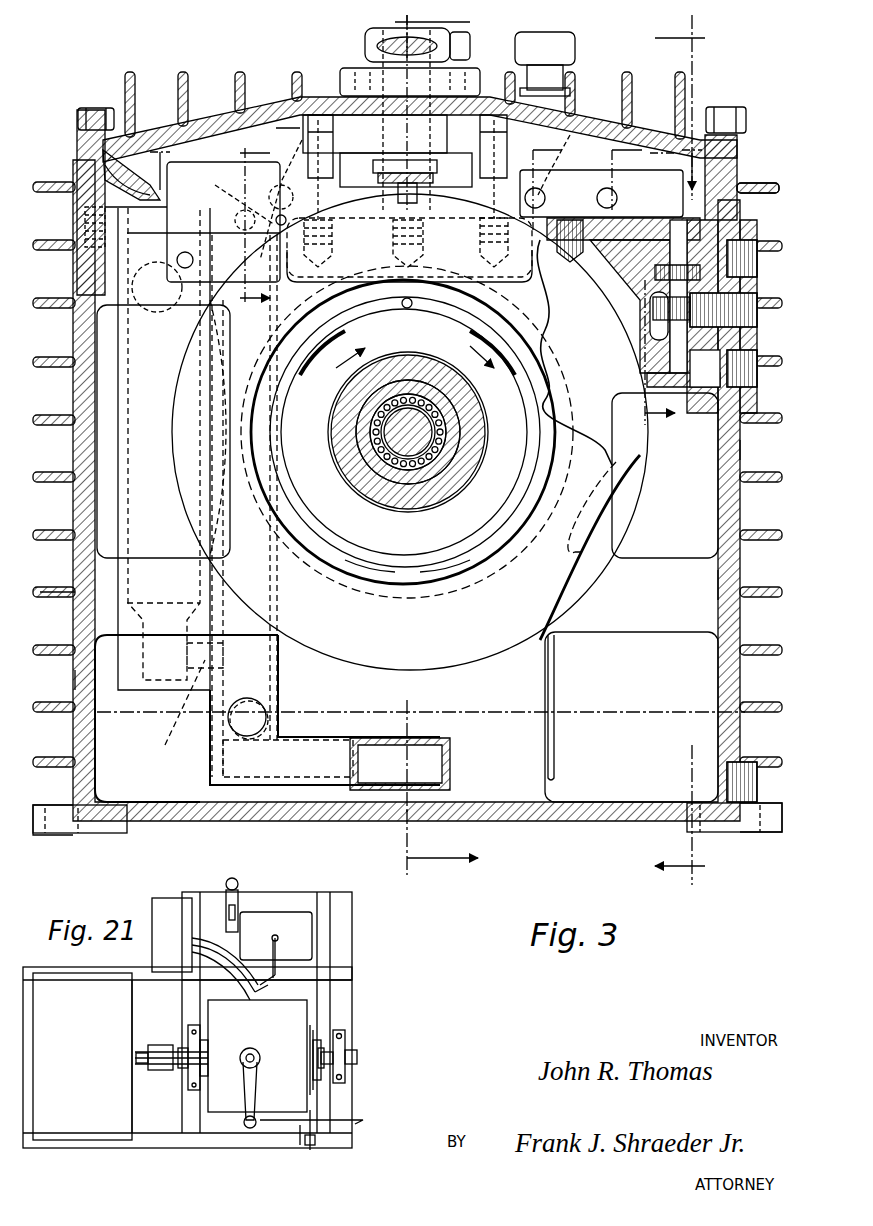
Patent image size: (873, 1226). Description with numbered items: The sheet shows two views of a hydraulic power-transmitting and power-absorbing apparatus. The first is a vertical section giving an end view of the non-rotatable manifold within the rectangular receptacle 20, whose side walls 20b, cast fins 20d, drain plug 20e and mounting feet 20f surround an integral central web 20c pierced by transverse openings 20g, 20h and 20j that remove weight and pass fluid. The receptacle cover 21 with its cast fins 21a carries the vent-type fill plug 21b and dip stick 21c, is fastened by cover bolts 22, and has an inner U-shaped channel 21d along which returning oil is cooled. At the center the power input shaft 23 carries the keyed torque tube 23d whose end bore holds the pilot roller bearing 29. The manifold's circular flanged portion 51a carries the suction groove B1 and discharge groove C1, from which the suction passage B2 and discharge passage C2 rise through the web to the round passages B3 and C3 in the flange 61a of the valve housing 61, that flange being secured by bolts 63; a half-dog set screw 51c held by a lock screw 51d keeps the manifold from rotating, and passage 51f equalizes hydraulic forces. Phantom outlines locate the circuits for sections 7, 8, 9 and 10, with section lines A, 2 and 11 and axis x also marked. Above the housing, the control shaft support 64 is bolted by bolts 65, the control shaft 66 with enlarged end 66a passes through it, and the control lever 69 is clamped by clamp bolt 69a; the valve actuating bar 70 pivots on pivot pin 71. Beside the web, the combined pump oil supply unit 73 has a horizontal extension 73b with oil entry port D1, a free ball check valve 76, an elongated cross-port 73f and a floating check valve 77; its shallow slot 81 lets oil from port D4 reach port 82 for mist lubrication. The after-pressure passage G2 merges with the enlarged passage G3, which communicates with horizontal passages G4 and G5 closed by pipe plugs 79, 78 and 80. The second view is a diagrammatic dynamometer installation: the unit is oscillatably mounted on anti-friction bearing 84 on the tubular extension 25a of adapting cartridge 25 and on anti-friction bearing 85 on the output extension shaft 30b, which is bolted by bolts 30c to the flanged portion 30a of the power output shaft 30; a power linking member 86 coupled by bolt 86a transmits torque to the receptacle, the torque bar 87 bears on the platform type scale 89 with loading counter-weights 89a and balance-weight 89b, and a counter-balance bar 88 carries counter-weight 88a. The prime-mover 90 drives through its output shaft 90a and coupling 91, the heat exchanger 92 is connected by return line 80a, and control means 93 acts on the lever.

In FIG. 3, the receptacle 20 is at (616, 824).
In FIG. 21, the receptacle 20 is at (318, 998).
In FIG. 3, the side walls 20b is at (735, 452).
In FIG. 3, the web portion 20c is at (720, 580).
In FIG. 3, the cast fins 20d is at (58, 592).
In FIG. 3, the drain plug 20e is at (748, 788).
In FIG. 3, the mounting feet 20f is at (60, 822).
In FIG. 3, the transverse opening 20g is at (108, 480).
In FIG. 3, the transverse opening 20h is at (700, 665).
In FIG. 3, the transverse opening 20j is at (700, 530).
In FIG. 3, the receptacle cover 21 is at (228, 108).
In FIG. 3, the cast fins 21a is at (762, 182).
In FIG. 3, the vent-type fill plug 21b is at (562, 44).
In FIG. 3, the dip stick 21c is at (555, 735).
In FIG. 3, the U-shaped channel 21d is at (130, 168).
In FIG. 3, the cover bolts 22 is at (90, 112).
In FIG. 21, the power input shaft 23 is at (172, 1070).
In FIG. 3, the torque tube 23d is at (416, 432).
In FIG. 21, the adapting cartridge 25 is at (200, 1030).
In FIG. 21, the tubular extension 25a is at (188, 1050).
In FIG. 3, the pilot roller bearing 29 is at (438, 432).
In FIG. 3, the power output shaft 30 is at (366, 446).
In FIG. 21, the flanged portion 30a is at (325, 1070).
In FIG. 21, the extension shaft 30b is at (358, 1052).
In FIG. 21, the bolts 30c is at (340, 1072).
In FIG. 3, the flanged portion 51a is at (459, 453).
In FIG. 3, the half-dog set screw 51c is at (425, 262).
In FIG. 3, the lock screw 51d is at (425, 233).
In FIG. 3, the passage 51f is at (410, 308).
In FIG. 3, the valve housing 61 is at (184, 218).
In FIG. 3, the flange 61a is at (620, 180).
In FIG. 3, the bolts 63 is at (332, 236).
In FIG. 3, the control shaft support 64 is at (358, 143).
In FIG. 3, the bolts 65 is at (320, 125).
In FIG. 3, the control shaft 66 is at (400, 158).
In FIG. 3, the enlarged end portion 66a is at (430, 163).
In FIG. 3, the control lever 69 is at (366, 45).
In FIG. 21, the control lever 69 is at (248, 1128).
In FIG. 3, the clamp bolt 69a is at (462, 48).
In FIG. 3, the valve actuating bar 70 is at (385, 183).
In FIG. 3, the pivot pin 71 is at (438, 177).
In FIG. 3, the combined pump oil supply unit 73 is at (126, 368).
In FIG. 3, the horizontal extension 73b is at (310, 752).
In FIG. 3, the cross-port 73f is at (251, 718).
In FIG. 3, the free ball check valve 76 is at (262, 708).
In FIG. 3, the floating check valve 77 is at (115, 312).
In FIG. 3, the pipe plug 78 is at (745, 320).
In FIG. 3, the pipe plug 79 is at (745, 380).
In FIG. 21, the pipe plug 79 is at (212, 950).
In FIG. 3, the pipe plug 80 is at (748, 268).
In FIG. 21, the return line 80a is at (220, 975).
In FIG. 3, the shallow slot 81 is at (215, 188).
In FIG. 3, the port 82 is at (284, 216).
In FIG. 21, the anti-friction bearing 84 is at (200, 1070).
In FIG. 21, the anti-friction bearing 85 is at (342, 1045).
In FIG. 21, the power linking member 86 is at (318, 1030).
In FIG. 21, the bolt 86a is at (318, 1025).
In FIG. 21, the torque bar 87 is at (278, 948).
In FIG. 21, the counter-balance bar 88 is at (305, 1128).
In FIG. 21, the counter-weight 88a is at (315, 1145).
In FIG. 21, the platform type scale 89 is at (298, 930).
In FIG. 21, the loading counter-weights 89a is at (226, 884).
In FIG. 21, the balance-weight 89b is at (240, 905).
In FIG. 21, the prime-mover 90 is at (60, 1125).
In FIG. 21, the output shaft 90a is at (140, 1065).
In FIG. 21, the coupling 91 is at (158, 1052).
In FIG. 21, the heat exchanger 92 is at (165, 958).
In FIG. 21, the control means 93 is at (360, 1125).
In FIG. 3, the section line A is at (435, 445).
In FIG. 3, the section line 2 is at (685, 450).
In FIG. 3, the section line 7— 7 is at (508, 255).
In FIG. 3, the section line 8— 8 is at (312, 251).
In FIG. 3, the section line 9— 9 is at (247, 226).
In FIG. 3, the section line 10— 10 is at (631, 283).
In FIG. 3, the section line 11 is at (427, 160).
In FIG. 3, the axis x is at (495, 704).
In FIG. 3, the fluid suction groove B1 is at (446, 542).
In FIG. 3, the fluid suction passage B2 is at (322, 374).
In FIG. 3, the round passage B3 is at (282, 194).
In FIG. 3, the fluid discharge groove C1 is at (370, 542).
In FIG. 3, the fluid discharge passage C2 is at (492, 374).
In FIG. 3, the round passage C3 is at (562, 159).
In FIG. 3, the oil entry port D1 is at (418, 783).
In FIG. 3, the port D4 is at (400, 432).
In FIG. 3, the passage G2 is at (630, 320).
In FIG. 3, the enlarged passage G3 is at (678, 365).
In FIG. 3, the horizontal passage G4 is at (710, 372).
In FIG. 3, the horizontal passage G5 is at (700, 260).